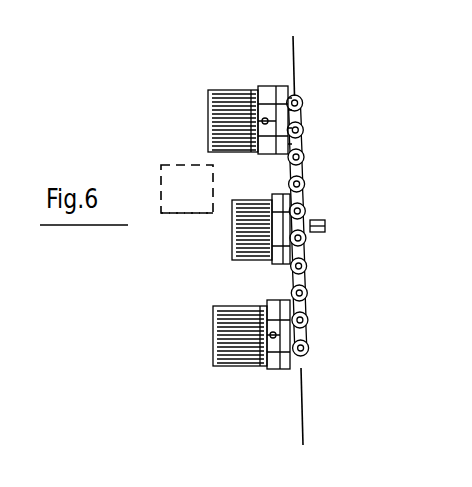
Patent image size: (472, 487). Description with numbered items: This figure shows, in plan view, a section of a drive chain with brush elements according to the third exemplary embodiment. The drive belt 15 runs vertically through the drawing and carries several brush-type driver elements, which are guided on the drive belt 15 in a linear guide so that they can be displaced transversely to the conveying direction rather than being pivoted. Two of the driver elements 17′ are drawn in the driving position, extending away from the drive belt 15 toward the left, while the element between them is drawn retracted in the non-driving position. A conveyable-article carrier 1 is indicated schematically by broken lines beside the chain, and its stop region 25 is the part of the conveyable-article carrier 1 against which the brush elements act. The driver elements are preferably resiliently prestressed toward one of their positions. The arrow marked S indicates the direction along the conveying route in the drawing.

The conveyable-article carrier 1 is at (172, 164).
The stop region 25 is at (195, 216).
The driver element in driving position 17′ is at (230, 88).
The drive belt 15 is at (308, 163).
The direction of travel S is at (150, 302).